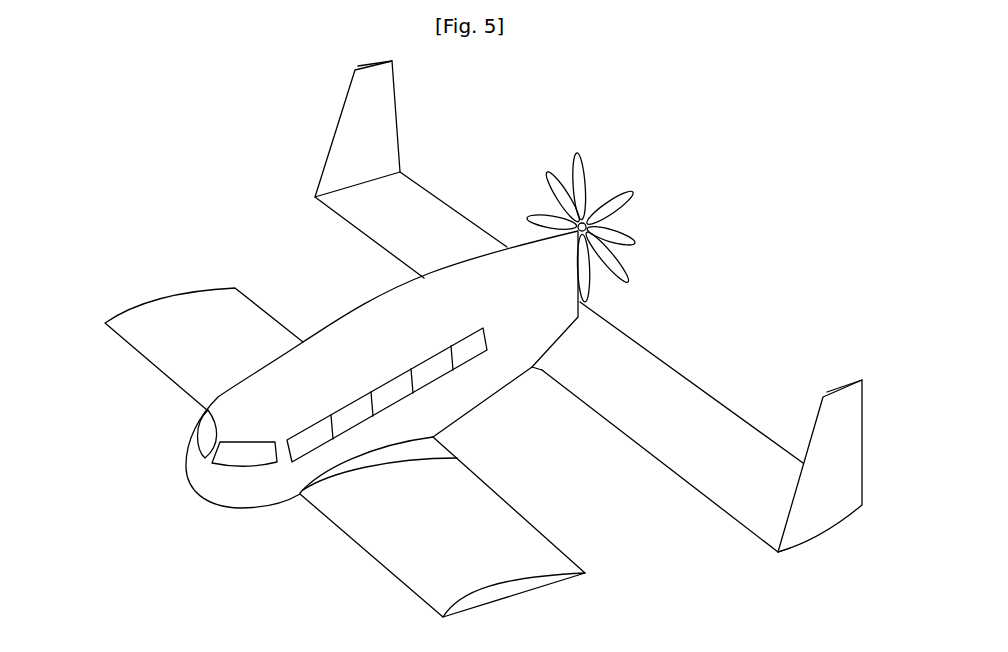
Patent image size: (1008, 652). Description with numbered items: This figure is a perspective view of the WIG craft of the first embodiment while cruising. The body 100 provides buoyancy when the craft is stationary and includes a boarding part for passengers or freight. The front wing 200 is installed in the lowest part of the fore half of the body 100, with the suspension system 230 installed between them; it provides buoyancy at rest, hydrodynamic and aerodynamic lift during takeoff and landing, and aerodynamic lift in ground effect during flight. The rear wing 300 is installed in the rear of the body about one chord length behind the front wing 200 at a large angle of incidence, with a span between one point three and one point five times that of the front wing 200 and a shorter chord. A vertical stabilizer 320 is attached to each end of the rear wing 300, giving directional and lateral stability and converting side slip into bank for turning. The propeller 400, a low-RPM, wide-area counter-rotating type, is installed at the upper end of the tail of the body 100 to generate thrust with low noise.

The body 100 is at (337, 340).
The front wing 200 is at (185, 347).
The suspension system 230 is at (418, 448).
The rear wing 300 is at (653, 397).
The vertical stabilizer 320 is at (372, 117).
The propeller 400 is at (588, 181).